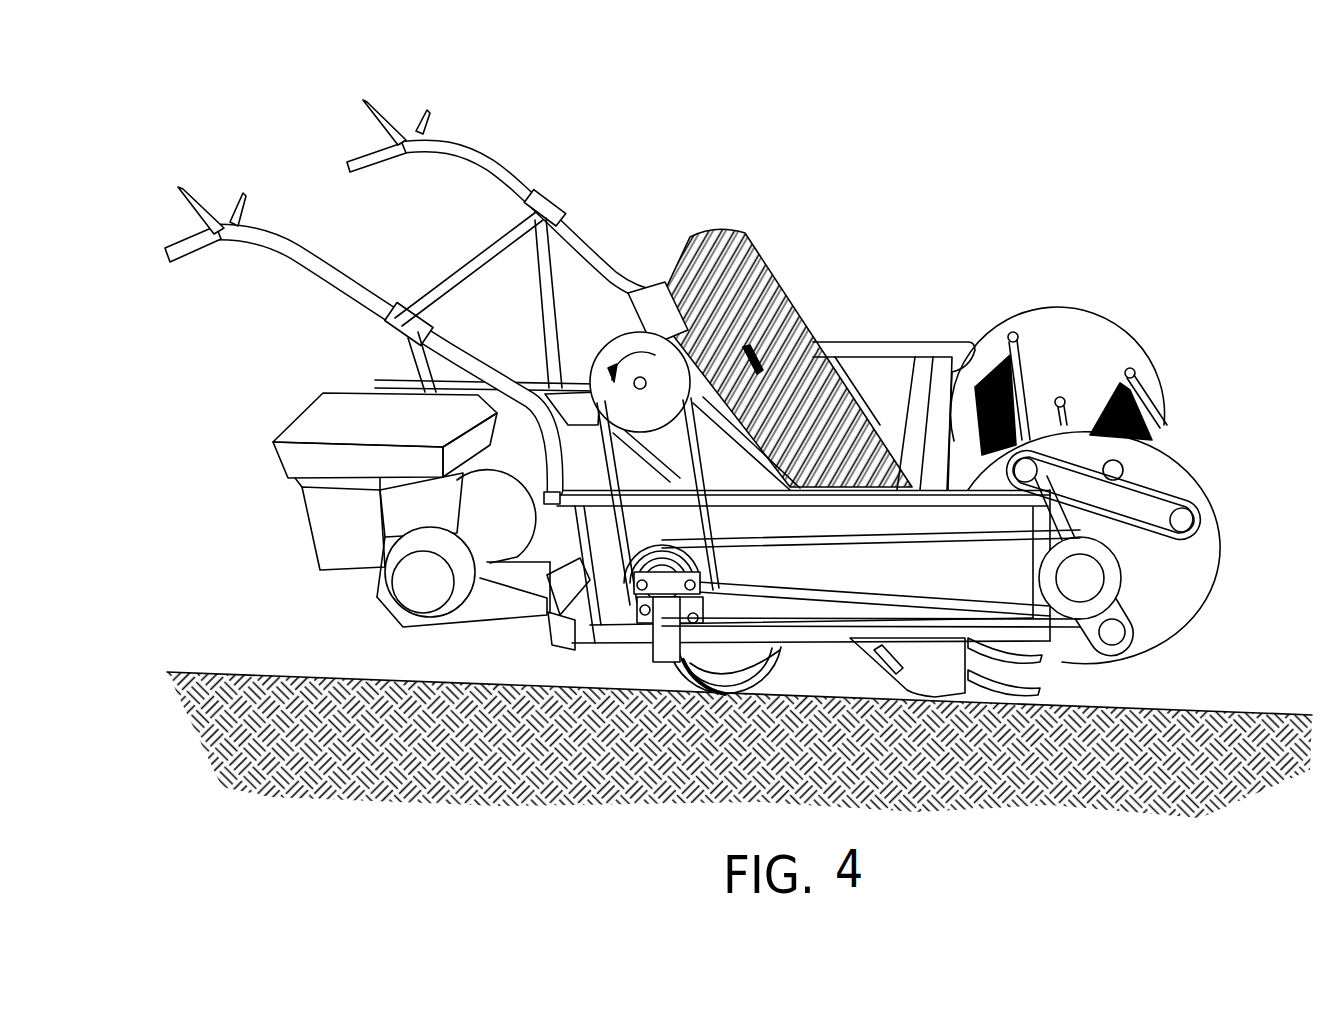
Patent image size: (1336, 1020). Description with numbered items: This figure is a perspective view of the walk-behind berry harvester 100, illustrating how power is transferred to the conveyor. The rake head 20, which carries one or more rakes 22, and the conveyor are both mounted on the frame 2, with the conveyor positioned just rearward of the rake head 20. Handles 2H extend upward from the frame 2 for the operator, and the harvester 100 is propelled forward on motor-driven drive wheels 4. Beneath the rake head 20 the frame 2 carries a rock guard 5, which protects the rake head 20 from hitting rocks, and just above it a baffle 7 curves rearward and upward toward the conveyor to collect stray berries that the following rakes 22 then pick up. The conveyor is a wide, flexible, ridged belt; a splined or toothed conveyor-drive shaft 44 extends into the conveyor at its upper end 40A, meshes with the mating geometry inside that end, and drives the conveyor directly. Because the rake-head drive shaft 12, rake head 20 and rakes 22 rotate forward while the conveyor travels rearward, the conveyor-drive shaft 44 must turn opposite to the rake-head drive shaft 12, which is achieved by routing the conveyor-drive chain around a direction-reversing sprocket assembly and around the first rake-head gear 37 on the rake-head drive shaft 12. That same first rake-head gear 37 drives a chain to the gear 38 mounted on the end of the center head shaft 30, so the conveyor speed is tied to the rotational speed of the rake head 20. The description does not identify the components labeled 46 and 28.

The walk-behind berry harvester 100 is at (738, 128).
The handles 2H is at (360, 157).
The upper end of the conveyor 40A is at (690, 305).
The conveyor-drive shaft 44 is at (650, 375).
The frame 2 is at (867, 430).
The rakes 22 is at (1013, 332).
The center head shaft 30 is at (1063, 398).
The rake head 20 is at (991, 392).
The engine 46 is at (420, 385).
The disk guard 28 is at (1205, 533).
The gear 38 is at (1112, 590).
The rock guard 5 is at (1040, 680).
The drive wheels 4 is at (760, 665).
The rake-head drive shaft 12 is at (655, 630).
The first rake-head gear 37 is at (640, 565).
The baffle 7 is at (920, 670).